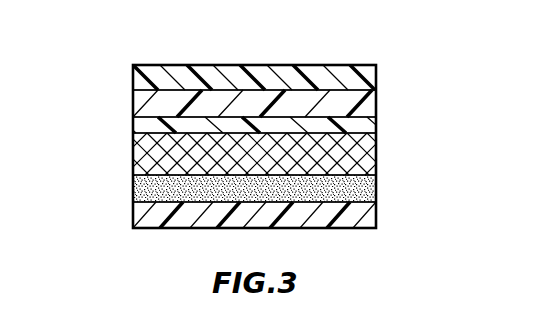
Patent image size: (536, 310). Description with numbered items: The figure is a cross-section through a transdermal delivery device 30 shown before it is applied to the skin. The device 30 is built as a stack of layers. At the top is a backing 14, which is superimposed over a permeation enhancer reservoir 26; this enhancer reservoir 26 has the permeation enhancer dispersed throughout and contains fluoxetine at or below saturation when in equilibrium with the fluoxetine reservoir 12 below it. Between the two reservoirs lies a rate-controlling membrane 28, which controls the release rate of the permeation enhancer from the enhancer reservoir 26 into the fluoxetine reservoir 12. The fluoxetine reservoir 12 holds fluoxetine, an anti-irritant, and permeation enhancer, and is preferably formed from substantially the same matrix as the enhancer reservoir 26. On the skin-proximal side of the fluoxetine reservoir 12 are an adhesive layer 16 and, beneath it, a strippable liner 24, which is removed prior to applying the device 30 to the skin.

The transdermal delivery device 30 is at (433, 54).
The backing 14 is at (146, 77).
The permeation enhancer reservoir 26 is at (370, 107).
The rate-controlling membrane 28 is at (142, 127).
The fluoxetine reservoir 12 is at (372, 157).
The adhesive layer 16 is at (145, 186).
The strippable liner 24 is at (370, 216).